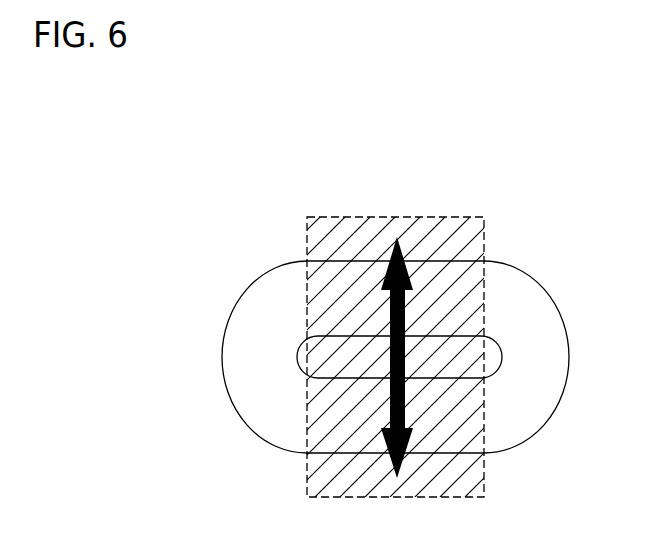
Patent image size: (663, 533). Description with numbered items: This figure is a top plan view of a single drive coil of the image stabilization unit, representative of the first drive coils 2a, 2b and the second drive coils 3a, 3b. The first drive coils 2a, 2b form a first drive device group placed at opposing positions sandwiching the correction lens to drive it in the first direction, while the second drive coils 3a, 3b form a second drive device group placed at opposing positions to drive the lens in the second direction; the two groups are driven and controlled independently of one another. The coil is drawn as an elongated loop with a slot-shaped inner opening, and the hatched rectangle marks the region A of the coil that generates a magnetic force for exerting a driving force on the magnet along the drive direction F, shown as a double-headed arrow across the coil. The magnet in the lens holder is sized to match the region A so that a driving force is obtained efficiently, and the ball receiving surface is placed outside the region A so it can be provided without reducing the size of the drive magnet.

The first drive coil 2a is at (315, 357).
The first drive coil 2b is at (315, 357).
The second drive coil 3a is at (315, 357).
The second drive coil 3b is at (227, 352).
The region A is at (392, 212).
The drive direction F is at (401, 357).